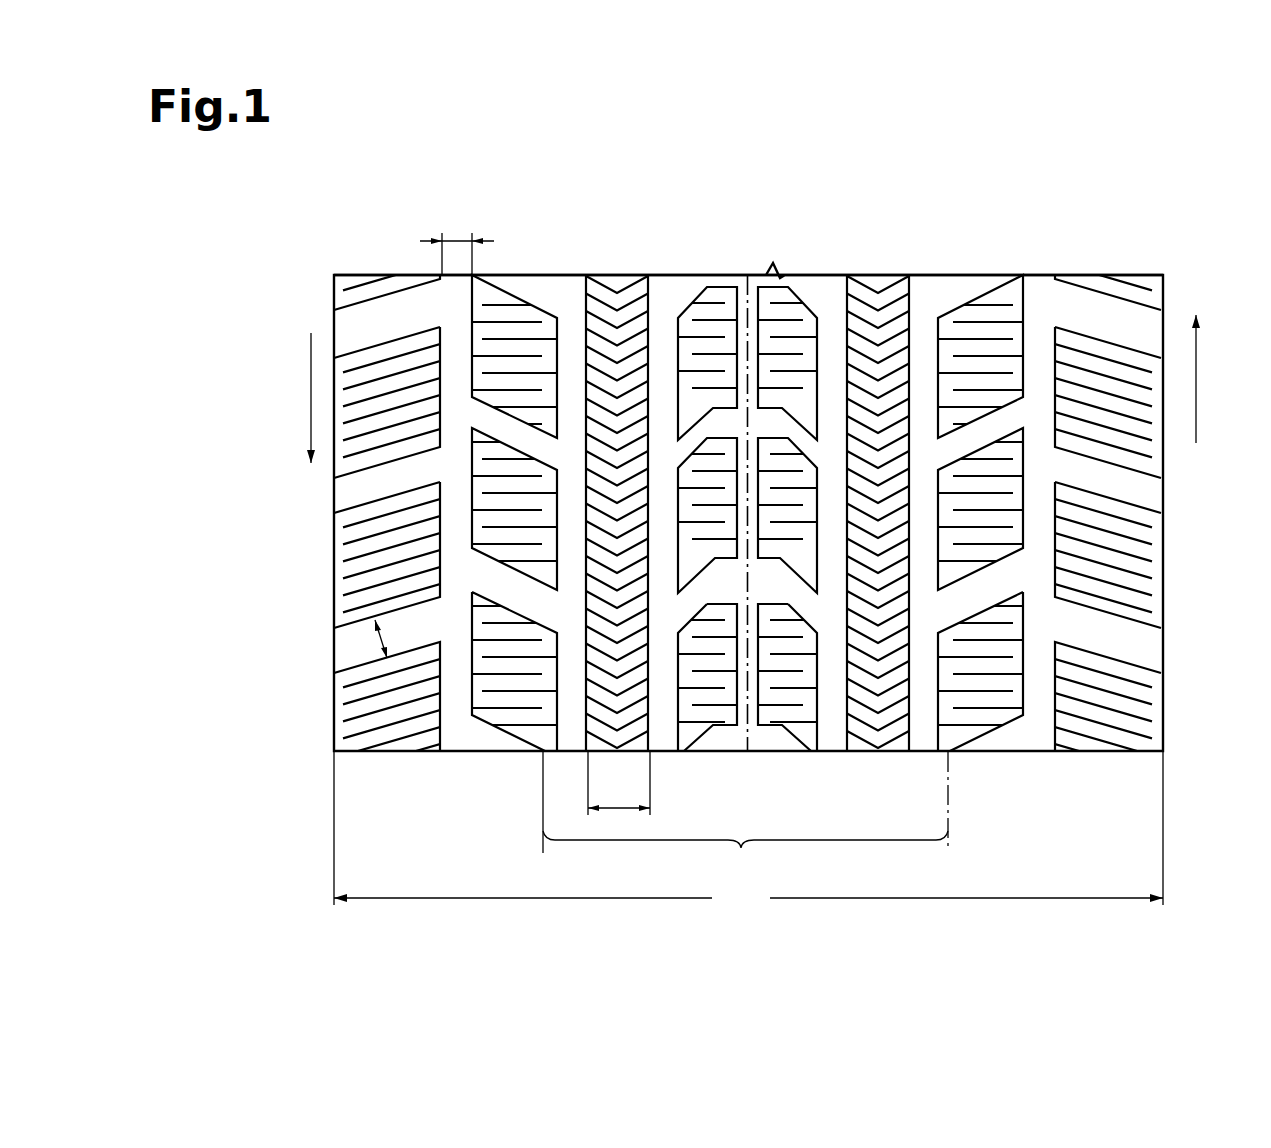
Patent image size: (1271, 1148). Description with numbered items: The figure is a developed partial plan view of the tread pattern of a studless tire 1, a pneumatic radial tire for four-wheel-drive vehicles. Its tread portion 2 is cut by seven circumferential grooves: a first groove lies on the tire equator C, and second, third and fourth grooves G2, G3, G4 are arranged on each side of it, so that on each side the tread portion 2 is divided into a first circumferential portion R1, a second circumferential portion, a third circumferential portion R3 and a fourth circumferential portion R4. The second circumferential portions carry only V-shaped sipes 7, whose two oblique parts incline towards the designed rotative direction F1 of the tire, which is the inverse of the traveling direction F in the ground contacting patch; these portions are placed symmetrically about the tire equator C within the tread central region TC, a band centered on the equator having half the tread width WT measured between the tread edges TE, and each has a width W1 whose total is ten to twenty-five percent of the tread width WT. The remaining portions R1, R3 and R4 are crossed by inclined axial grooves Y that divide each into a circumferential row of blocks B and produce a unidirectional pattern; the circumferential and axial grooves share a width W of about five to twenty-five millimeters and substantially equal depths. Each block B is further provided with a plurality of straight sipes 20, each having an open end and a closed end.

The studless tire 1 is at (1070, 257).
The tread portion 2 is at (1040, 247).
The V-shaped sipe 7 is at (629, 283).
The straight sipe 20 is at (357, 702).
The first circumferential portion R1 is at (711, 268).
The third circumferential portion R3 is at (531, 268).
The fourth circumferential portion R4 is at (362, 268).
The block B is at (358, 742).
The tire equator C is at (748, 752).
The traveling direction F is at (301, 398).
The designed rotative direction F1 is at (1215, 379).
The second circumferential groove G2 is at (663, 733).
The third circumferential groove G3 is at (571, 733).
The fourth circumferential groove G4 is at (452, 733).
The tread central region TC is at (745, 818).
The tread edge TE is at (334, 818).
The groove width W is at (309, 653).
The width of circumferential portion W1 is at (619, 783).
The tread width WT is at (748, 904).
The axial groove Y is at (487, 573).